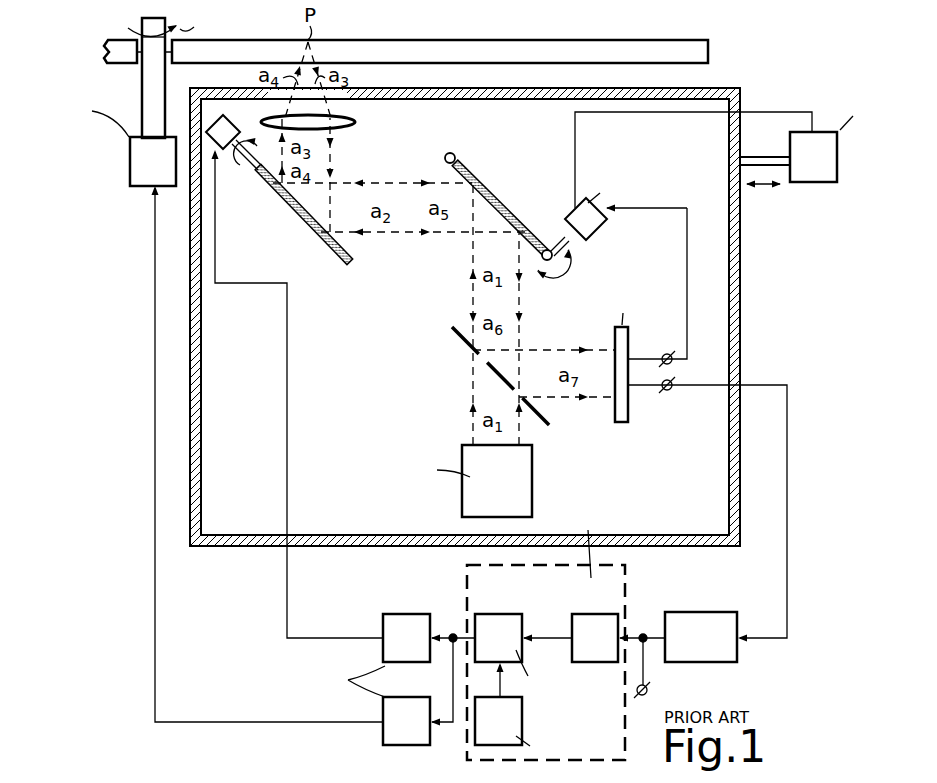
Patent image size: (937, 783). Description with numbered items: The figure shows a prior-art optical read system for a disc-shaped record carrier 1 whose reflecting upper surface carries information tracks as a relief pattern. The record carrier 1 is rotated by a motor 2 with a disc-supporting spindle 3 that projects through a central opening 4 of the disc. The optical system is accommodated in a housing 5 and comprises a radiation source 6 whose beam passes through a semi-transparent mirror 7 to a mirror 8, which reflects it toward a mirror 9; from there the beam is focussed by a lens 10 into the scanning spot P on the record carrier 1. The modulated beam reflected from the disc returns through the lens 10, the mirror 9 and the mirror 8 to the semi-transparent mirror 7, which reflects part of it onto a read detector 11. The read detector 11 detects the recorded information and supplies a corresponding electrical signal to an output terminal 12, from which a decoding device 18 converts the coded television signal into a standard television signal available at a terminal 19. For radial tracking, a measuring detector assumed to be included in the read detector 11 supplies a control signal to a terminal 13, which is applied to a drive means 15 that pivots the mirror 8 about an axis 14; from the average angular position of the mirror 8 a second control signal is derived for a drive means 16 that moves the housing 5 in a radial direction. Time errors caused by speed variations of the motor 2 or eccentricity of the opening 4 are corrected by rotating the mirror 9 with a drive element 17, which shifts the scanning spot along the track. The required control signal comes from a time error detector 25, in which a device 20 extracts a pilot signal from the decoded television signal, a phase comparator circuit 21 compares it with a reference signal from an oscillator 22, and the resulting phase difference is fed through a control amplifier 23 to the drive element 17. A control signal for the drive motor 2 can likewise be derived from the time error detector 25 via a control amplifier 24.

The record carrier 1 is at (486, 38).
The motor 2 is at (130, 159).
The disc-supporting spindle 3 is at (143, 21).
The central opening 4 is at (140, 62).
The housing 5 is at (743, 270).
The radiation source 6 is at (534, 480).
The semi-transparent mirror 7 is at (456, 342).
The mirror 8 is at (510, 213).
The mirror 9 is at (295, 203).
The lens 10 is at (354, 122).
The read detector 11 is at (622, 425).
The output terminal 12 is at (665, 395).
The terminal 13 is at (665, 353).
The axis 14 is at (456, 154).
The drive means 15 is at (605, 229).
The drive means 16 is at (815, 184).
The drive element 17 is at (228, 118).
The decoding device 18 is at (700, 663).
The terminal 19 is at (652, 688).
The device for extracting a pilot signal 20 is at (592, 622).
The phase comparator circuit 21 is at (498, 622).
The oscillator 22 is at (524, 720).
The control amplifier 23 is at (402, 622).
The control amplifier 24 is at (385, 746).
The time error detector 25 is at (628, 578).